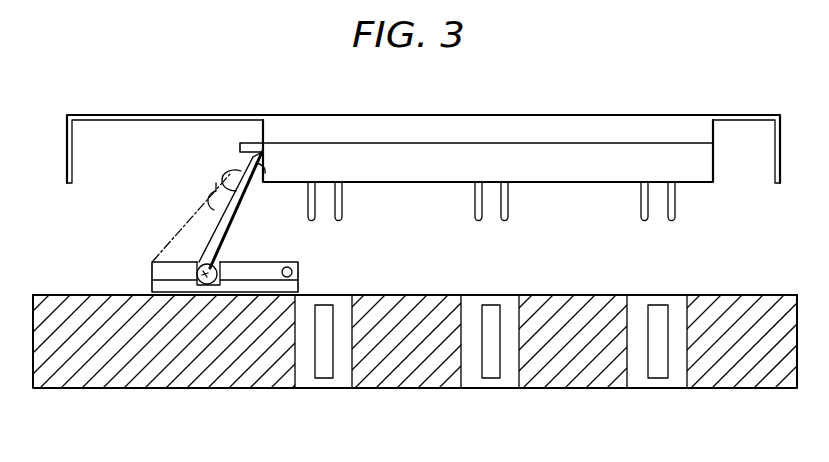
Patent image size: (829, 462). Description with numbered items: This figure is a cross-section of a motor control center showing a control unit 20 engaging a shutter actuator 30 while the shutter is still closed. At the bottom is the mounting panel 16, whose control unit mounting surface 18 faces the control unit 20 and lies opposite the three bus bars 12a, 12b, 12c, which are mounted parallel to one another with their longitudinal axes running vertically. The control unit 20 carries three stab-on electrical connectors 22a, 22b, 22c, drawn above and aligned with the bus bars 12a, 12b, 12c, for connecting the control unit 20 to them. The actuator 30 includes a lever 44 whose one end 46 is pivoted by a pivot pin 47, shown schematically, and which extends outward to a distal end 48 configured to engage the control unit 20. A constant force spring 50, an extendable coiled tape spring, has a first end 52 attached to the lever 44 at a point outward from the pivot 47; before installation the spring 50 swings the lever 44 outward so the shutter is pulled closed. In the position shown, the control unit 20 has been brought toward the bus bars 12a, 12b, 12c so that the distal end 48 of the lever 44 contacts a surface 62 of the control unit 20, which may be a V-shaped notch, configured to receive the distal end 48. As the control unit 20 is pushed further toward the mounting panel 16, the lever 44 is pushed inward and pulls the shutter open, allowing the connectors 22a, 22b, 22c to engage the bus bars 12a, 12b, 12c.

The shutter actuator 30 is at (138, 110).
The control unit 20 is at (745, 115).
The distal end of the lever 48 is at (238, 148).
The lever 44 is at (223, 178).
The first end of the constant force spring 52 is at (215, 186).
The constant force spring 50 is at (175, 233).
The surface of the control unit 62 is at (258, 168).
The one end of the lever 46 is at (222, 271).
The pivot pin 47 is at (200, 285).
The control unit mounting surface 18 is at (80, 293).
The mounting panel 16 is at (230, 390).
The bus bar 12a is at (323, 372).
The bus bar 12b is at (490, 372).
The bus bar 12c is at (656, 372).
The stab-on electrical connector 22a is at (322, 216).
The stab-on electrical connector 22b is at (488, 216).
The stab-on electrical connector 22c is at (655, 215).